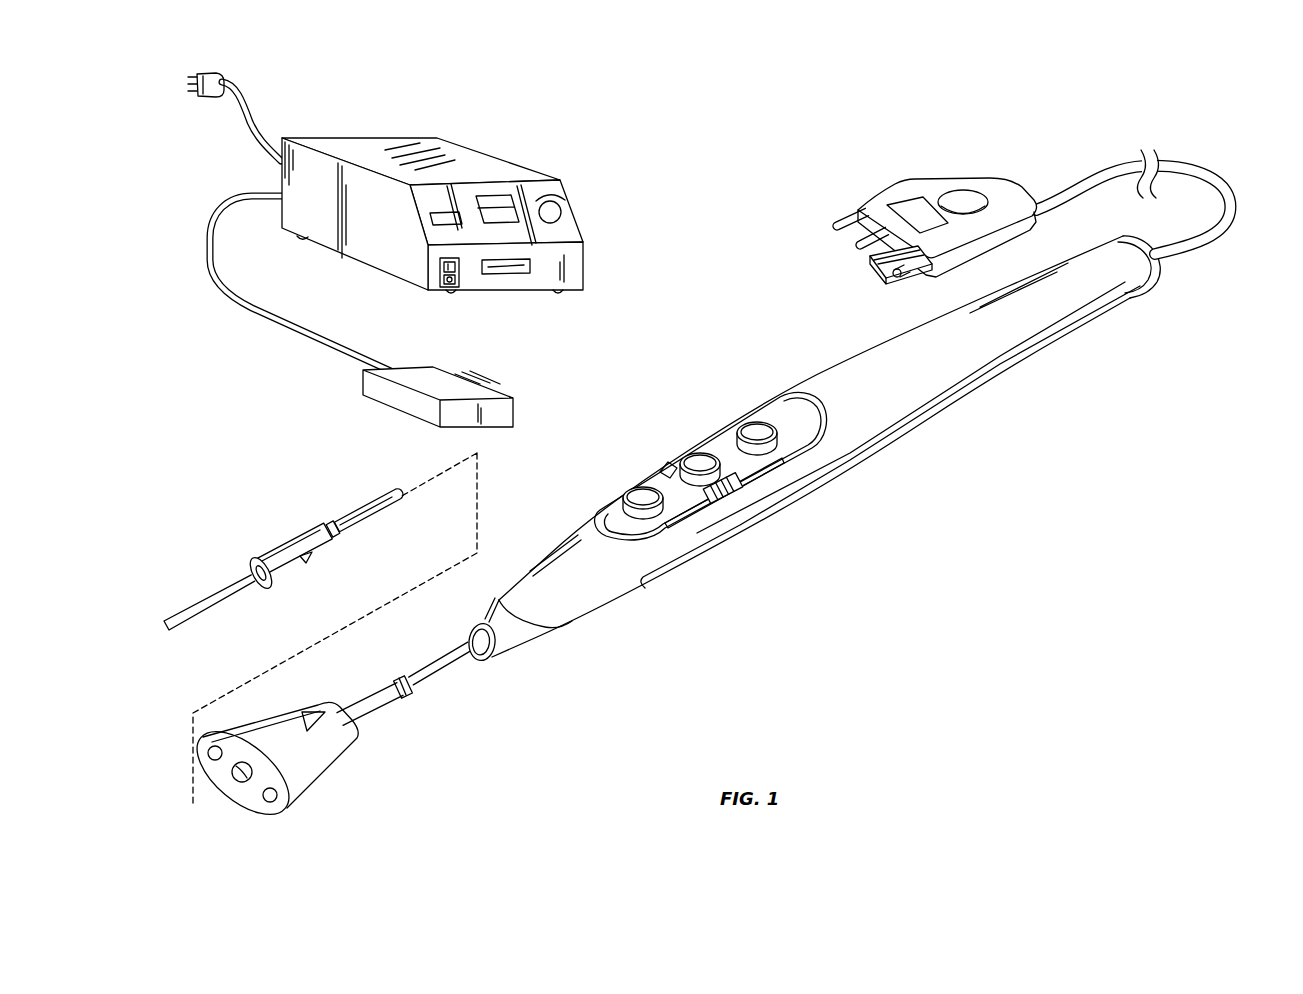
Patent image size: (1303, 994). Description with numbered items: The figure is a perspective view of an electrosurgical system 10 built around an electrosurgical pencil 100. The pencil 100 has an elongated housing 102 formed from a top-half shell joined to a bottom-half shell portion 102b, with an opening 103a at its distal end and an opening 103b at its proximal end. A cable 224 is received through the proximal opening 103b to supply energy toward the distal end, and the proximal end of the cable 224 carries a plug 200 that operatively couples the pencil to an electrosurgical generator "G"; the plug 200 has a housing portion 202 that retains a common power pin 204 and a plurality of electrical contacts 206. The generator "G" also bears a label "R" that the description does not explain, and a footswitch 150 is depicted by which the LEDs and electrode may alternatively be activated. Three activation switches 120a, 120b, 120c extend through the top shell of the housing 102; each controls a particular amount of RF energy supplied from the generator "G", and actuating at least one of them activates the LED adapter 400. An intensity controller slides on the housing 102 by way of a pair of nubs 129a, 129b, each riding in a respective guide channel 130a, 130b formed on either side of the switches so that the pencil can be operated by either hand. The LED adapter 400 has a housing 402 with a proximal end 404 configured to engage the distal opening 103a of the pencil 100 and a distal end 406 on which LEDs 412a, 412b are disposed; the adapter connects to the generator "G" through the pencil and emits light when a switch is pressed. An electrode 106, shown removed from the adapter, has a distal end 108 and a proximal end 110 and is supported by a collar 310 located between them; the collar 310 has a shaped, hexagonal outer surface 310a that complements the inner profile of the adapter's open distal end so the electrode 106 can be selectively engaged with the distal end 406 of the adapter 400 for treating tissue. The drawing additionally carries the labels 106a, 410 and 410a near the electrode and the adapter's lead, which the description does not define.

The electrosurgical system 10 is at (672, 150).
The electrosurgical generator G is at (510, 152).
The receptacle/connector port R is at (500, 265).
The footswitch 150 is at (397, 400).
The electrosurgical pencil 100 is at (820, 449).
The elongated housing 102 is at (812, 446).
The bottom-half shell portion 102b is at (947, 416).
The distal opening 103a is at (478, 634).
The proximal opening 103b is at (1160, 262).
The activation switch 120a is at (636, 492).
The activation switch 120b is at (692, 460).
The activation switch 120c is at (752, 428).
The nub 129a is at (666, 468).
The nub 129b is at (735, 492).
The guide channel 130a is at (716, 455).
The guide channel 130b is at (780, 465).
The electrode 106 is at (275, 576).
The ring / collar of instrument 106a is at (211, 597).
The distal end of electrode 108 is at (162, 642).
The proximal end of electrode 110 is at (370, 508).
The collar 310 is at (290, 568).
The shaped outer surface 310a is at (340, 532).
The plug 200 is at (913, 227).
The housing portion 202 is at (942, 190).
The common power pin 204 is at (898, 278).
The electrical contacts 206 is at (866, 267).
The cable 224 is at (1192, 172).
The LED adapter 400 is at (307, 733).
The housing 402 is at (335, 760).
The proximal end 404 is at (415, 665).
The distal end 406 is at (238, 774).
The adapter cable sheath 410 is at (372, 716).
The cable collar 410a is at (410, 690).
The LED 412a is at (210, 752).
The LED 412b is at (283, 797).